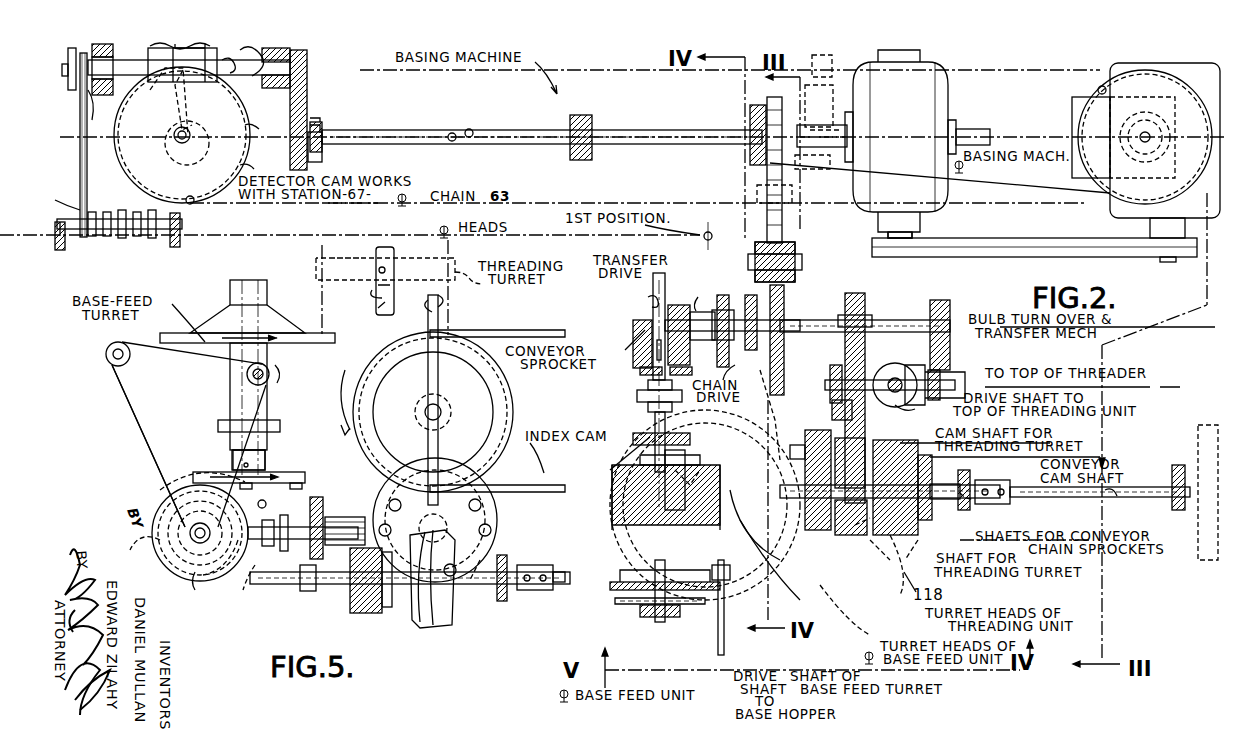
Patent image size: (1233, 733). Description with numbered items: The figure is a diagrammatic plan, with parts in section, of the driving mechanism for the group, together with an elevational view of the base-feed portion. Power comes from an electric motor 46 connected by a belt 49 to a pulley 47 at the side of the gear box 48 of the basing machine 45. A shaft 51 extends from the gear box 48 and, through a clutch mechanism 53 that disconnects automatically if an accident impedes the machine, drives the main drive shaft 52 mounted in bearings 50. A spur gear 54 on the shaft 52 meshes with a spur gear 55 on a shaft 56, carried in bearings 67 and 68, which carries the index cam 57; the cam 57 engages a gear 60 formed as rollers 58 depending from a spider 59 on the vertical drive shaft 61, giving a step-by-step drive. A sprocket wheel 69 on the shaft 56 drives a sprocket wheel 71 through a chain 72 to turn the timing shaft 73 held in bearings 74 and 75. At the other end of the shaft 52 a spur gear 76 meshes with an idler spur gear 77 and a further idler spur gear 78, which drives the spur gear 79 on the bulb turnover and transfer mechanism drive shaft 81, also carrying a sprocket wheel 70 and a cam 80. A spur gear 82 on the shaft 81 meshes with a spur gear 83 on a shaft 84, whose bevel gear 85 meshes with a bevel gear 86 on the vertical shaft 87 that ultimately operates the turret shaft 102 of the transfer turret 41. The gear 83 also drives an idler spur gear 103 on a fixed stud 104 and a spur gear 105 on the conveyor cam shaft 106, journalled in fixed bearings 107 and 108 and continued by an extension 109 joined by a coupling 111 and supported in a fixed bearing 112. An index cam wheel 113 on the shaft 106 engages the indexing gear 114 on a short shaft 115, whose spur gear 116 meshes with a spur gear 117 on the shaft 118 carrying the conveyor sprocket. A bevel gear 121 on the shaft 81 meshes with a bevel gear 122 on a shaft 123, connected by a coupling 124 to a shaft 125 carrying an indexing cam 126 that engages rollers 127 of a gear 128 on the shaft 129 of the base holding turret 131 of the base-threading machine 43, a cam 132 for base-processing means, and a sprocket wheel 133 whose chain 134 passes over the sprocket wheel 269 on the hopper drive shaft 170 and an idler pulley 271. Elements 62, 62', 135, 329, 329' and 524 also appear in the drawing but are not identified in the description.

In FIG. 2, the transfer turret 41 is at (845, 553).
In FIG. 2, the base-threading machine 43 is at (815, 580).
In FIG. 2, the basing machine 45 is at (547, 74).
In FIG. 2, the electric motor 46 is at (1146, 140).
In FIG. 2, the pulley 47 is at (912, 236).
In FIG. 2, the gear box 48 is at (900, 144).
In FIG. 2, the belt 49 is at (1037, 244).
In FIG. 2, the bearings 50 is at (570, 150).
In FIG. 2, the shaft 51 is at (975, 127).
In FIG. 2, the main drive shaft 52 is at (662, 132).
In FIG. 2, the clutch mechanism 53 is at (835, 105).
In FIG. 2, the spur gear 54 is at (305, 120).
In FIG. 2, the spur gear 55 is at (300, 95).
In FIG. 2, the shaft 56 is at (235, 88).
In FIG. 2, the index cam 57 is at (93, 78).
In FIG. 2, the rollers 58 is at (228, 101).
In FIG. 2, the spider 59 is at (259, 128).
In FIG. 2, the gear 60 is at (257, 155).
In FIG. 2, the vertical drive shaft 61 is at (174, 140).
In FIG. 2, the detector cam 62 is at (173, 135).
In FIG. 2, the cam disc 62' is at (1131, 137).
In FIG. 2, the bearing 67 is at (120, 58).
In FIG. 2, the bearing 68 is at (300, 68).
In FIG. 2, the sprocket wheel 69 is at (99, 120).
In FIG. 2, the sprocket wheel 70 is at (737, 318).
In FIG. 2, the sprocket wheel 71 is at (65, 193).
In FIG. 2, the chain 72 is at (81, 110).
In FIG. 2, the timing shaft 73 is at (116, 232).
In FIG. 2, the bearing 74 is at (61, 242).
In FIG. 2, the bearing 75 is at (182, 232).
In FIG. 2, the spur gear 76 is at (758, 164).
In FIG. 2, the idler spur gear 77 is at (782, 212).
In FIG. 2, the idler spur gear 78 is at (750, 277).
In FIG. 2, the spur gear 79 is at (782, 350).
In FIG. 5, the spur gear 79 is at (314, 498).
In FIG. 2, the cam 80 is at (712, 330).
In FIG. 2, the bulb turnover and transfer mechanism drive shaft 81 is at (792, 324).
In FIG. 5, the bulb turnover and transfer mechanism drive shaft 81 is at (345, 522).
In FIG. 2, the spur gear 82 is at (860, 293).
In FIG. 2, the spur gear 83 is at (837, 408).
In FIG. 2, the shaft 84 is at (827, 385).
In FIG. 2, the bevel gear 85 is at (926, 368).
In FIG. 2, the bevel gear 86 is at (942, 325).
In FIG. 2, the vertical shaft 87 is at (914, 410).
In FIG. 2, the turret shaft 102 is at (379, 248).
In FIG. 2, the idler spur gear 103 is at (905, 426).
In FIG. 2, the fixed stud 104 is at (813, 433).
In FIG. 2, the spur gear 105 is at (858, 538).
In FIG. 5, the spur gear 105 is at (377, 610).
In FIG. 2, the conveyor cam shaft 106 is at (912, 487).
In FIG. 5, the conveyor cam shaft 106 is at (502, 584).
In FIG. 2, the fixed bearing 107 is at (780, 491).
In FIG. 5, the fixed bearing 107 is at (367, 590).
In FIG. 2, the fixed bearing 108 is at (987, 480).
In FIG. 5, the fixed bearing 108 is at (508, 568).
In FIG. 2, the extension 109 is at (1042, 492).
In FIG. 2, the coupling 111 is at (982, 500).
In FIG. 2, the fixed bearing 112 is at (1170, 504).
In FIG. 2, the index cam wheel 113 is at (945, 482).
In FIG. 5, the index cam wheel 113 is at (460, 590).
In FIG. 5, the indexing gear 114 is at (495, 545).
In FIG. 5, the short shaft 115 is at (446, 524).
In FIG. 5, the spur gear 116 is at (490, 550).
In FIG. 2, the spur gear 117 is at (515, 422).
In FIG. 2, the shaft 118 is at (439, 410).
In FIG. 2, the bevel gear 121 is at (681, 312).
In FIG. 5, the bevel gear 121 is at (265, 577).
In FIG. 2, the bevel gear 122 is at (642, 337).
In FIG. 2, the shaft 123 is at (653, 307).
In FIG. 2, the coupling 124 is at (650, 393).
In FIG. 2, the shaft 125 is at (686, 479).
In FIG. 2, the indexing cam 126 is at (612, 478).
In FIG. 5, the indexing cam 126 is at (196, 538).
In FIG. 5, the rollers 127 is at (196, 489).
In FIG. 5, the gear 128 is at (285, 472).
In FIG. 5, the shaft 129 is at (259, 498).
In FIG. 5, the base holding turret 131 is at (285, 318).
In FIG. 2, the cam 132 is at (627, 582).
In FIG. 5, the cam 132 is at (155, 543).
In FIG. 2, the sprocket wheel 133 is at (650, 618).
In FIG. 5, the sprocket wheel 133 is at (195, 587).
In FIG. 2, the chain 134 is at (603, 611).
In FIG. 5, the chain 134 is at (144, 440).
In FIG. 2, the shaft 135 is at (670, 616).
In FIG. 2, the hopper drive shaft 170 is at (724, 633).
In FIG. 5, the hopper drive shaft 170 is at (264, 384).
In FIG. 5, the sprocket wheel 269 is at (248, 374).
In FIG. 5, the idler pulley 271 is at (110, 358).
In FIG. 2, the pin 329 is at (210, 212).
In FIG. 2, the pin 329' is at (1086, 69).
In FIG. 2, the bearing 524 is at (68, 91).